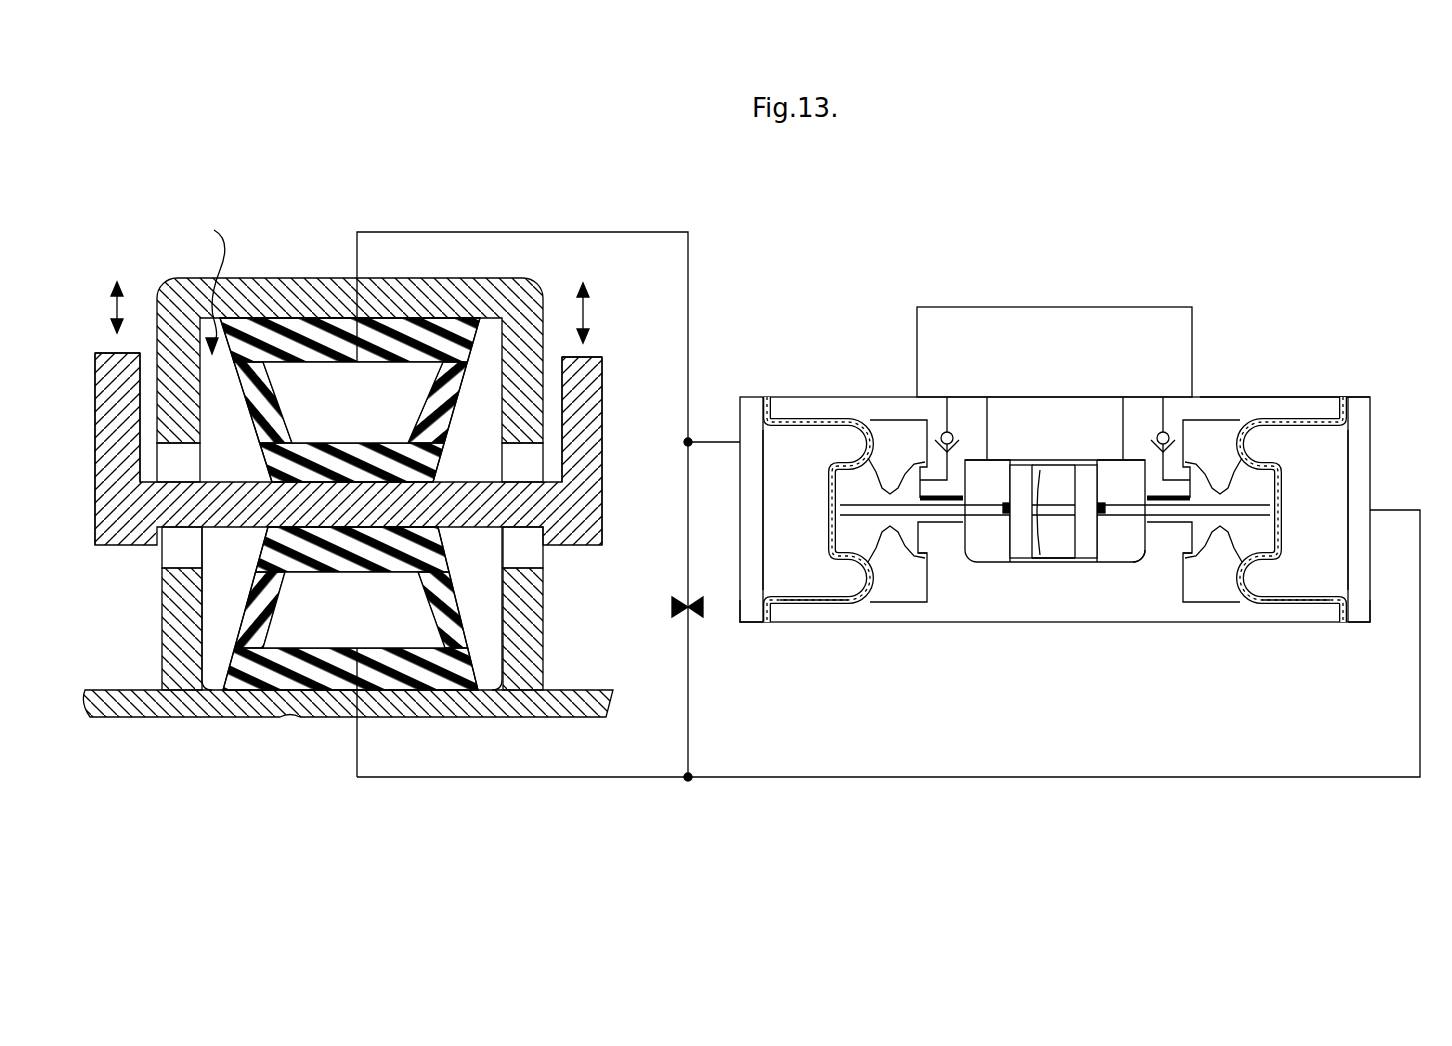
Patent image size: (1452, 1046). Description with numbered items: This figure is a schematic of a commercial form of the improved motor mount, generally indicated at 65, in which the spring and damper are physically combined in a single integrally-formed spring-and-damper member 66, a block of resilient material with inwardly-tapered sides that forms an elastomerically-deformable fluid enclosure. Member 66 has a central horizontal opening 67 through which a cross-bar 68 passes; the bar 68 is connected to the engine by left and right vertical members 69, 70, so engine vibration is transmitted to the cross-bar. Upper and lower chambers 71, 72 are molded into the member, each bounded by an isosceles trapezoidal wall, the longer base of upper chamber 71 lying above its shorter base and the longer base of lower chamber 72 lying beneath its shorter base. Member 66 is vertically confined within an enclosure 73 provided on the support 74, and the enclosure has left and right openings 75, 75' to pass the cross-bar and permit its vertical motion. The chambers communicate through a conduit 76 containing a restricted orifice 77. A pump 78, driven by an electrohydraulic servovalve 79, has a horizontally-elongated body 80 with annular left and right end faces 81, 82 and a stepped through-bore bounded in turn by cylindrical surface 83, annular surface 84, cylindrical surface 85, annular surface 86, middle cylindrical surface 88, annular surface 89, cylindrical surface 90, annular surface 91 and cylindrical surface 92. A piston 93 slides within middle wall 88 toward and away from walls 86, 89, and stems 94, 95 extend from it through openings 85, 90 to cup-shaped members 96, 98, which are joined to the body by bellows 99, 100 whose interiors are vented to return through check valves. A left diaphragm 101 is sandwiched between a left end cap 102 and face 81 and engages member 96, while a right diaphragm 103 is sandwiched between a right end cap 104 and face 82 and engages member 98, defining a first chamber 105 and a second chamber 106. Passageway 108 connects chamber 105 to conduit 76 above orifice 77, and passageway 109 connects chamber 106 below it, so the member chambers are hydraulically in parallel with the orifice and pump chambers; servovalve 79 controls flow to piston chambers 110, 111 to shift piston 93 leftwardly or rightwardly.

The improved mount 65 is at (893, 252).
The spring-and-damper member 66 is at (202, 281).
The central horizontal opening 67 is at (393, 517).
The cross-bar 68 is at (348, 449).
The left vertical member 69 is at (118, 443).
The right vertical member 70 is at (588, 378).
The upper chamber 71 is at (350, 400).
The lower chamber 72 is at (350, 608).
The enclosure 73 is at (518, 290).
The support 74 is at (305, 707).
The left opening 75 is at (150, 608).
The right opening 75' is at (552, 608).
The conduit 76 is at (694, 300).
The restricted orifice 77 is at (672, 606).
The pump 78 is at (1286, 388).
The electrohydraulic servovalve 79 is at (1152, 300).
The body 80 is at (1035, 622).
The left end face 81 is at (756, 623).
The right end face 82 is at (1356, 606).
The inwardly-facing horizontal cylindrical surface 83 is at (888, 600).
The leftwardly-facing annular vertical surface 84 is at (930, 586).
The inwardly-facing horizontal cylindrical surface 85 is at (955, 508).
The rightwardly-facing annular vertical surface 86 is at (975, 565).
The inwardly-facing horizontal cylindrical surface 88 is at (1050, 563).
The leftwardly-facing annular vertical surface 89 is at (1140, 565).
The inwardly-facing horizontal cylindrical surface 90 is at (1168, 506).
The rightwardly-facing annular vertical surface 91 is at (1190, 572).
The inwardly-facing horizontal cylindrical surface 92 is at (1215, 600).
The piston 93 is at (1050, 486).
The left stem 94 is at (982, 510).
The right stem 95 is at (1117, 510).
The cup-shaped member 96 is at (905, 488).
The cup-shaped member 98 is at (1205, 488).
The bellows 99 is at (905, 540).
The bellows 100 is at (1208, 540).
The left diaphragm 101 is at (840, 428).
The left end cap 102 is at (757, 484).
The right diaphragm 103 is at (1272, 430).
The right end cap 104 is at (1362, 478).
The first chamber 105 is at (789, 510).
The second chamber 106 is at (1318, 510).
The passageway 108 is at (716, 440).
The passageway 109 is at (960, 778).
The piston chamber 110 is at (988, 538).
The piston chamber 111 is at (1120, 538).